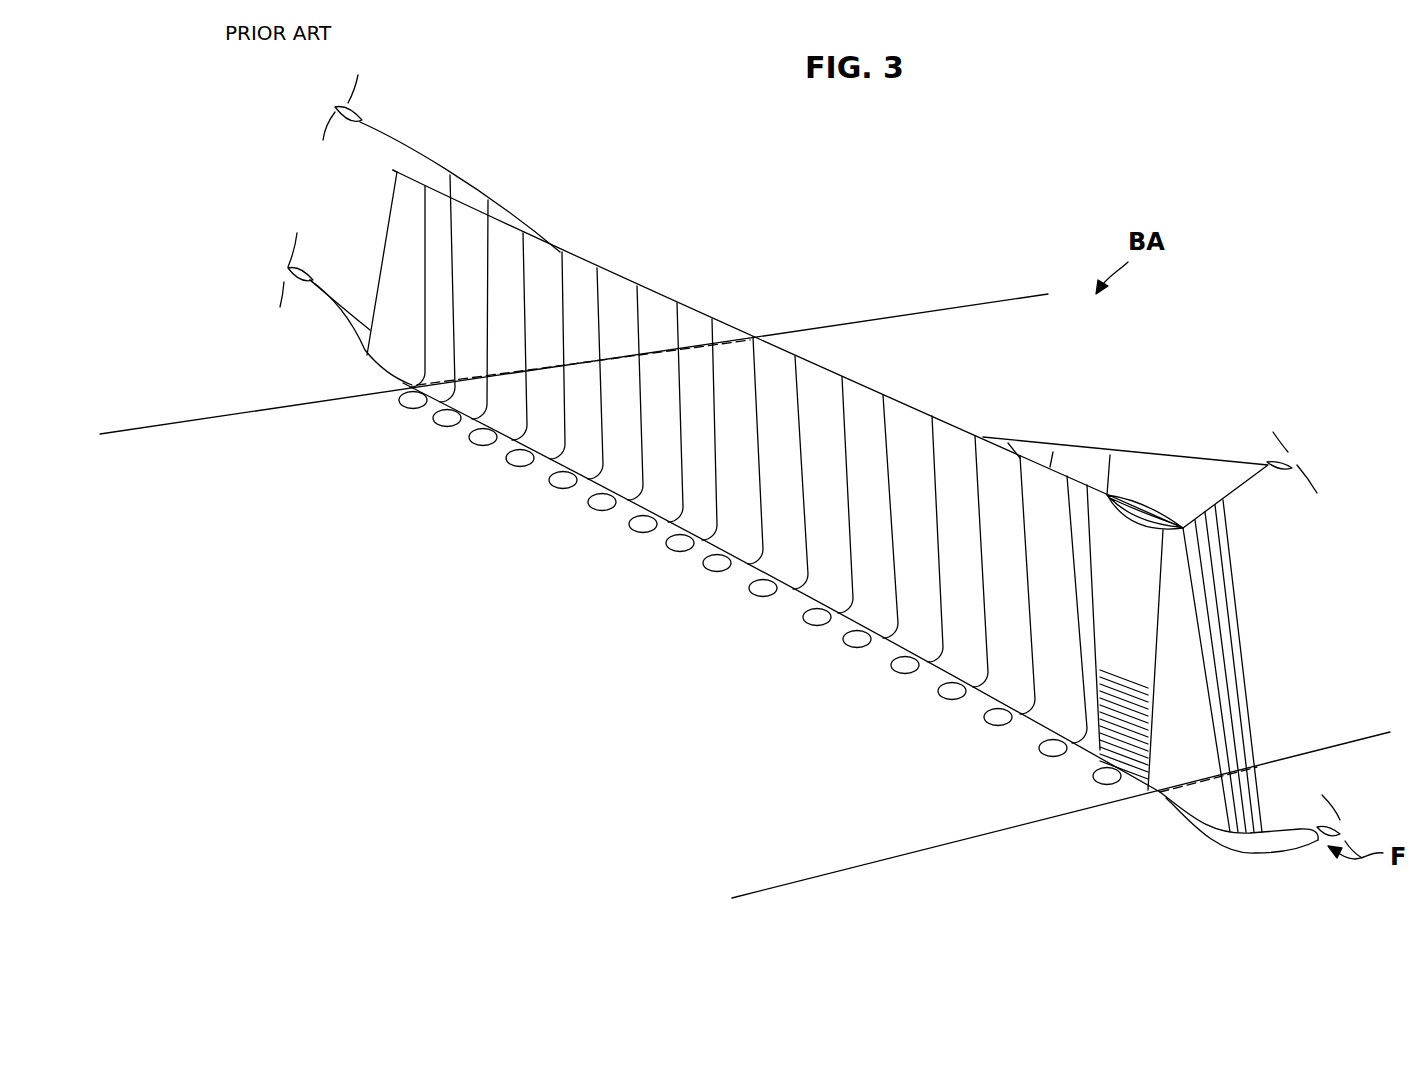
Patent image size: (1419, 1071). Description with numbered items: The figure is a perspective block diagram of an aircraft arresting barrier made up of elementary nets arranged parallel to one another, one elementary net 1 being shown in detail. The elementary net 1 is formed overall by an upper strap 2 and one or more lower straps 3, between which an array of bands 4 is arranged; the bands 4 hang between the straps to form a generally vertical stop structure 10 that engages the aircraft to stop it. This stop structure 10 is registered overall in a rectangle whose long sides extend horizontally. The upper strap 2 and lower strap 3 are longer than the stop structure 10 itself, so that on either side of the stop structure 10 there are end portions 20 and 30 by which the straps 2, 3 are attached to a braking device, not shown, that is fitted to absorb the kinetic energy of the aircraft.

The elementary net 1 is at (585, 562).
The upper strap 2 is at (693, 308).
The lower strap 3 is at (747, 573).
The band 4 is at (684, 447).
The stop structure 10 is at (930, 376).
The end portion 20 is at (1227, 660).
The end portion 30 is at (1197, 817).